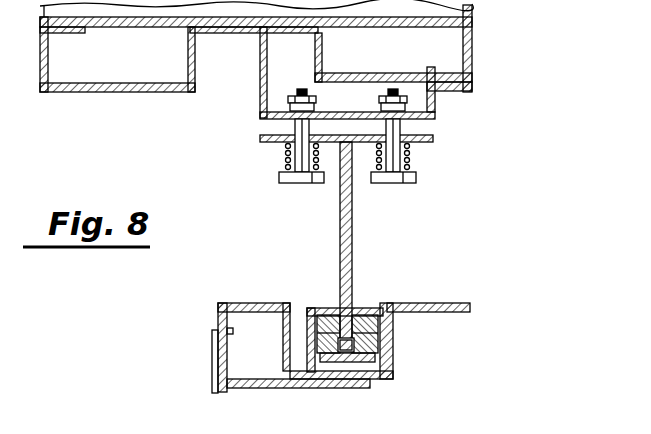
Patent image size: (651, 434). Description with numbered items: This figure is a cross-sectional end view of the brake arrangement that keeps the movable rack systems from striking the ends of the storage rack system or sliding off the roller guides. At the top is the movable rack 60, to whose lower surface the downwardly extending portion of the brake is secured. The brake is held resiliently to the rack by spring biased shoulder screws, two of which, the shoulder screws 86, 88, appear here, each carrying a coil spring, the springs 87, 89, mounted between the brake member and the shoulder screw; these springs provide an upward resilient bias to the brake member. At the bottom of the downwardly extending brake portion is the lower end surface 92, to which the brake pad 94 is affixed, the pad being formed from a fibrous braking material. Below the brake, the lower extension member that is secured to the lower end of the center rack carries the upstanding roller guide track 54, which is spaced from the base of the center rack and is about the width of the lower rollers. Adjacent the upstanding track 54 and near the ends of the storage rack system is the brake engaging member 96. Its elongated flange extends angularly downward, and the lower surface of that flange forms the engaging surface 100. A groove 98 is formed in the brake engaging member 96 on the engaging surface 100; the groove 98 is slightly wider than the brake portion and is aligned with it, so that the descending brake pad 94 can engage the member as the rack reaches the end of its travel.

The movable rack 60 is at (472, 60).
The spring 87 is at (285, 153).
The spring 89 is at (413, 153).
The spring biased shoulder screw 86 is at (305, 183).
The spring biased shoulder screw 88 is at (392, 183).
The upstanding roller guide track 54 is at (253, 302).
The brake engaging member 96 is at (368, 312).
The groove 98 is at (338, 310).
The engaging surface 100 is at (322, 305).
The brake pad 94 is at (378, 333).
The lower end surface 92 is at (380, 362).